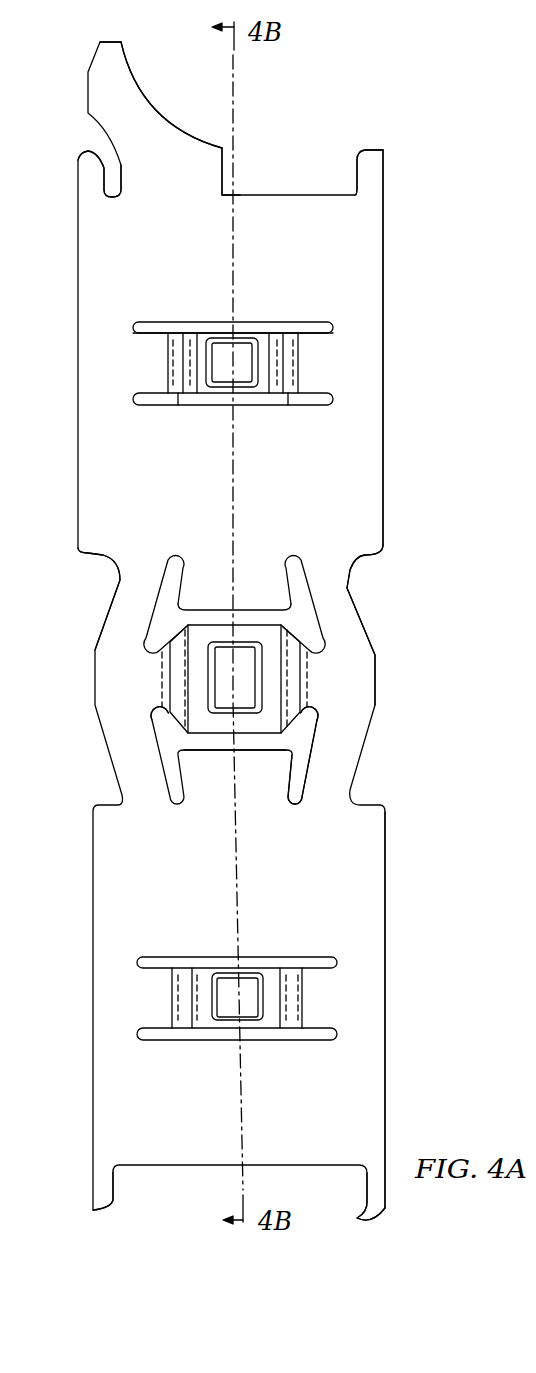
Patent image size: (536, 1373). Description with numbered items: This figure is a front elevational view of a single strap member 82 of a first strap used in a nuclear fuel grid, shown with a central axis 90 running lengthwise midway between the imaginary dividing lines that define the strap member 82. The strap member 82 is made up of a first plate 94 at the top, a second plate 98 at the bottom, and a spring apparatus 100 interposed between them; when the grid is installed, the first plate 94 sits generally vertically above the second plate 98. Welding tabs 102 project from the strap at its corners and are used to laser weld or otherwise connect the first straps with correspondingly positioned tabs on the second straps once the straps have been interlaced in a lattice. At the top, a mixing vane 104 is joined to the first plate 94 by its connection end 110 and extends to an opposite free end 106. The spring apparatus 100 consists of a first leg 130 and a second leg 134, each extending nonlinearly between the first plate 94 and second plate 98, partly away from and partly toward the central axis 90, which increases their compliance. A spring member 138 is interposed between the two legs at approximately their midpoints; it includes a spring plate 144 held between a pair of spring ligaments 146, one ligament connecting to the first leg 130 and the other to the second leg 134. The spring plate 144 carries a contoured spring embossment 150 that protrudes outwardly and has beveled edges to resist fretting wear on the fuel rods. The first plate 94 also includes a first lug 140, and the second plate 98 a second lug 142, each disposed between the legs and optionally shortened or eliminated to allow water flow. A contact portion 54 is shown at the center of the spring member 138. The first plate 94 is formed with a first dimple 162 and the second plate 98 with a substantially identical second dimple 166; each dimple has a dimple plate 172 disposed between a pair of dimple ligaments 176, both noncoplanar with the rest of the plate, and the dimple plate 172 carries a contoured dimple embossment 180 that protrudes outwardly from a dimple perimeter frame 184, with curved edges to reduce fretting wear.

The contact portion 54 is at (234, 647).
The strap member 82 is at (275, 193).
The central axis 90 is at (243, 1062).
The first plate 94 is at (386, 219).
The second plate 98 is at (384, 826).
The spring apparatus 100 is at (378, 663).
The welding tabs 102 is at (85, 152).
The mixing vane 104 is at (170, 74).
The free end 106 is at (110, 41).
The connection end 110 is at (226, 195).
The first leg 130 is at (360, 604).
The second leg 134 is at (110, 606).
The spring member 138 is at (303, 730).
The first lug 140 is at (292, 582).
The second lug 142 is at (296, 770).
The spring plate 144 is at (211, 736).
The spring ligaments 146 is at (160, 722).
The spring embossment 150 is at (240, 647).
The first dimple 162 is at (236, 363).
The second dimple 166 is at (275, 962).
The dimple plate 172 is at (265, 396).
The dimple ligaments 176 is at (178, 406).
The dimple embossment 180 is at (238, 345).
The dimple perimeter frame 184 is at (207, 323).